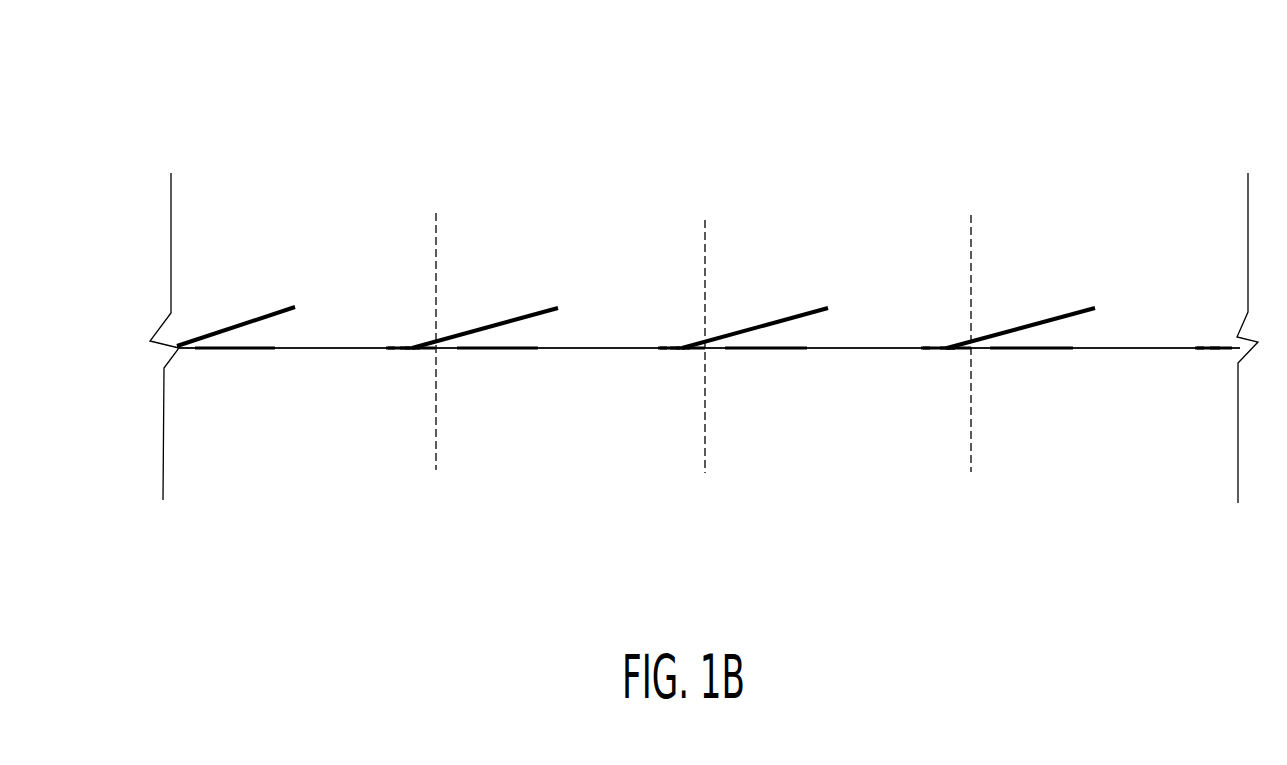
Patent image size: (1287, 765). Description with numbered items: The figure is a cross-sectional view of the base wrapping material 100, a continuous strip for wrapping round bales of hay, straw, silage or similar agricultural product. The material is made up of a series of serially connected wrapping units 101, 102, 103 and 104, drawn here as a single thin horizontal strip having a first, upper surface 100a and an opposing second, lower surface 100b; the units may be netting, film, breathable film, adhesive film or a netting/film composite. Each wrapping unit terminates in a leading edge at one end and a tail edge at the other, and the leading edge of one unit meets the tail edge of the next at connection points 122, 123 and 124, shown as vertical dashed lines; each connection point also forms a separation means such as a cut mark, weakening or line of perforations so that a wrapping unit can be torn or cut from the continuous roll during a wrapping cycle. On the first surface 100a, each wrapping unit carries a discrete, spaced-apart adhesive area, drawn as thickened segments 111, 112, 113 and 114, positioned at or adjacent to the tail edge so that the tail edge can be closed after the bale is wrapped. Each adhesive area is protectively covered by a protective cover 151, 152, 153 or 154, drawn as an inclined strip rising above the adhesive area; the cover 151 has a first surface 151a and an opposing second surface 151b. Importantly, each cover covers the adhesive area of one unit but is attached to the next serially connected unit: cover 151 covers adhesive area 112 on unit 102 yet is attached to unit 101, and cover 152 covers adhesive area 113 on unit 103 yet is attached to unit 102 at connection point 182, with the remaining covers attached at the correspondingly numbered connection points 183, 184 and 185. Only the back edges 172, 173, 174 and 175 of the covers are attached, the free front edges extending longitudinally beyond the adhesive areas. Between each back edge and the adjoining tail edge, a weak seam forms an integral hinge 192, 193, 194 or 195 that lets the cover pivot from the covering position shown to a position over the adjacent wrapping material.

The base wrapping material 100 is at (213, 127).
The first surface 100a is at (645, 192).
The second surface 100b is at (768, 475).
The wrapping unit 101 is at (327, 272).
The wrapping unit 102 is at (588, 272).
The wrapping unit 103 is at (851, 272).
The fourth segment 104 is at (1117, 270).
The first base portion 111 is at (228, 352).
The adhesive area 112 is at (494, 352).
The adhesive area 113 is at (765, 352).
The fourth base portion 114 is at (1027, 352).
The connection point 122 is at (437, 215).
The second boundary 123 is at (705, 218).
The third boundary 124 is at (971, 215).
The protective cover 151 is at (223, 322).
The first surface of protective cover 151a is at (267, 302).
The second surface of protective cover 151b is at (289, 325).
The protective cover 152 is at (485, 323).
The third flap 153 is at (752, 325).
The fourth flap 154 is at (1018, 325).
The back edge 172 is at (390, 349).
The third joint 173 is at (660, 350).
The fourth joint 174 is at (922, 350).
The end joint 175 is at (1197, 350).
The connection point 182 is at (405, 367).
The third junction 183 is at (675, 365).
The fourth junction 184 is at (950, 365).
The end junction 185 is at (1217, 365).
The integral hinge 192 is at (413, 346).
The third hinge region 193 is at (686, 346).
The fourth hinge region 194 is at (950, 346).
The end hinge region 195 is at (1222, 346).